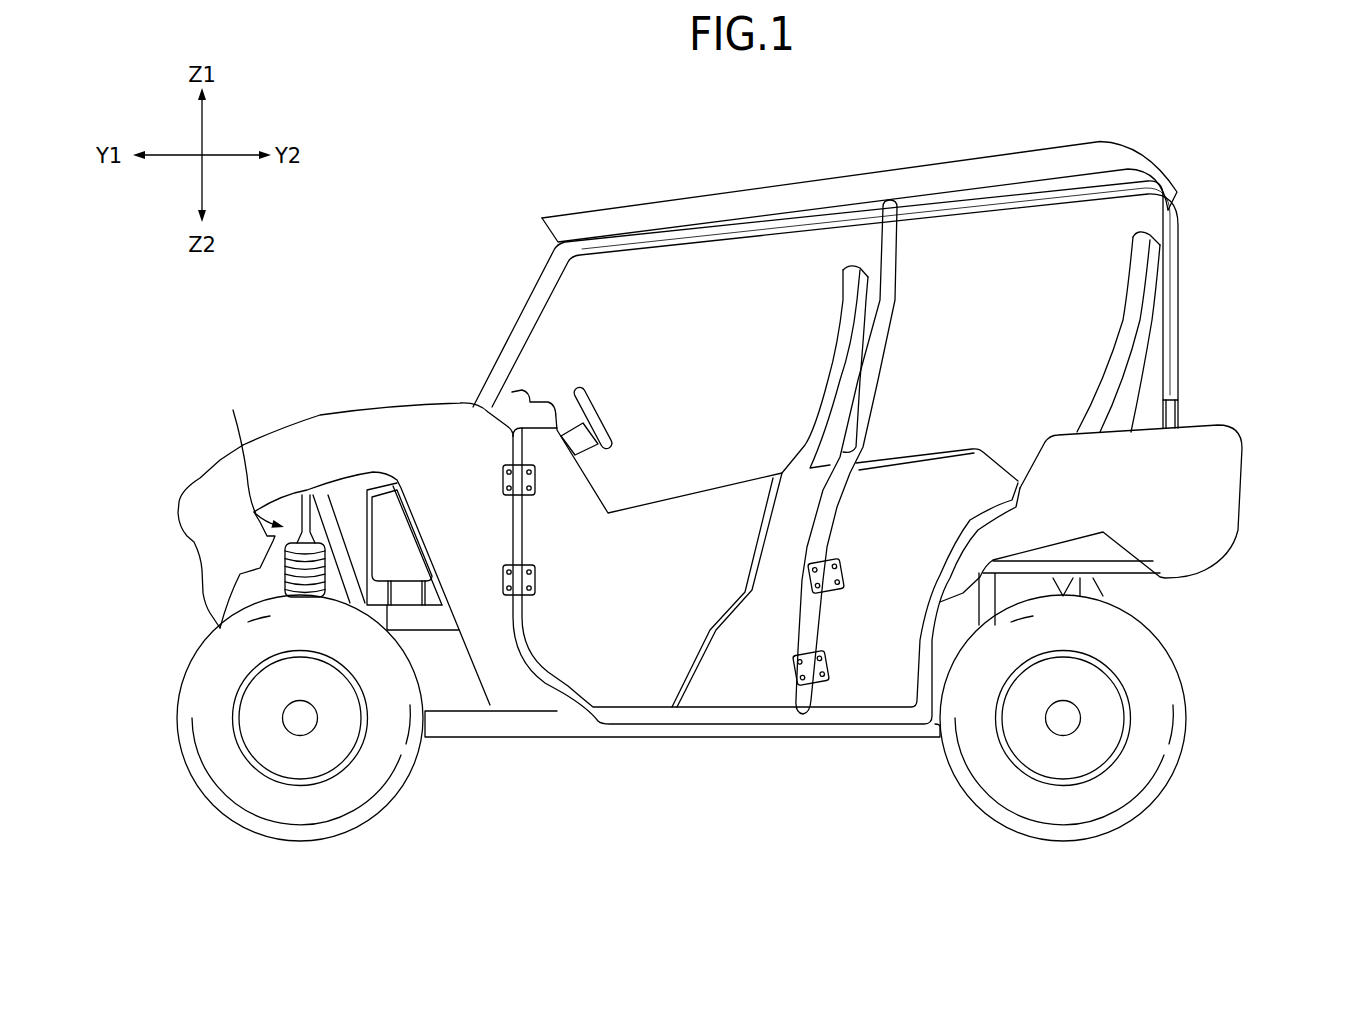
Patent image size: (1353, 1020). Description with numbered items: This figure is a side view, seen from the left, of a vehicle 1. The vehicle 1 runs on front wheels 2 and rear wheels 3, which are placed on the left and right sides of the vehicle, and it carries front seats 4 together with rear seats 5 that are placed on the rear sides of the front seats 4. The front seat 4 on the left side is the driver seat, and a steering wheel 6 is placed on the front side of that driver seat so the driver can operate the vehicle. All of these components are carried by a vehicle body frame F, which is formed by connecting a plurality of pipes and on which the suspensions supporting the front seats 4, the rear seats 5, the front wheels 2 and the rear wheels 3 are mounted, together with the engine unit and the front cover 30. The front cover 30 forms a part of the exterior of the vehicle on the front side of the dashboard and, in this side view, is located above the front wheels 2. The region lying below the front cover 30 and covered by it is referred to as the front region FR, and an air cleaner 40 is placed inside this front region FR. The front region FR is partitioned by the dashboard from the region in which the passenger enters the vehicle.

The vehicle 1 is at (1252, 186).
The front wheels 2 is at (313, 843).
The rear wheels 3 is at (1072, 843).
The front seats 4 is at (838, 322).
The rear seats 5 is at (1129, 274).
The steering wheel 6 is at (597, 400).
The front cover 30 is at (318, 415).
The air cleaner 40 is at (363, 522).
The vehicle body frame F is at (527, 303).
The front region FR is at (252, 455).